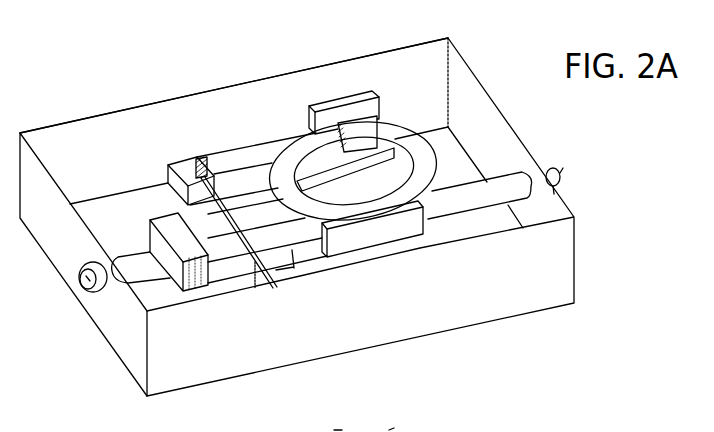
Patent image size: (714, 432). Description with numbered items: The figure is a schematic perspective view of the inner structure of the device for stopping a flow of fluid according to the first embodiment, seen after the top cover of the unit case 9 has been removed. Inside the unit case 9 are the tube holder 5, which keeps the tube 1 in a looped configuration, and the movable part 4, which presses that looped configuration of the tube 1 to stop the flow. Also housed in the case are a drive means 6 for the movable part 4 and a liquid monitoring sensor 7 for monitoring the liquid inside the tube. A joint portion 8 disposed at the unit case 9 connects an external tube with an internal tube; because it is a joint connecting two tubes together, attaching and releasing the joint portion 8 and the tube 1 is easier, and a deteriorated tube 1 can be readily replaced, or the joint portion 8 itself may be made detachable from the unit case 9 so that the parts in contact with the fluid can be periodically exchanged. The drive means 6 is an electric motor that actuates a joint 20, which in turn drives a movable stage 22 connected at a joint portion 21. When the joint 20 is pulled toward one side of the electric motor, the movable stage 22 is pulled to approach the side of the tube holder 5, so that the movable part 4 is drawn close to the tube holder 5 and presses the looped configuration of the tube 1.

The tube 1 is at (401, 130).
The movable part 4 is at (328, 101).
The tube holder 5 is at (391, 238).
The drive means 6 is at (282, 272).
The liquid monitoring sensor 7 is at (200, 279).
The joint portion 8 is at (81, 286).
The unit case 9 is at (80, 138).
The joint 20 is at (177, 181).
The joint portion 21 is at (194, 160).
The movable stage 22 is at (250, 160).